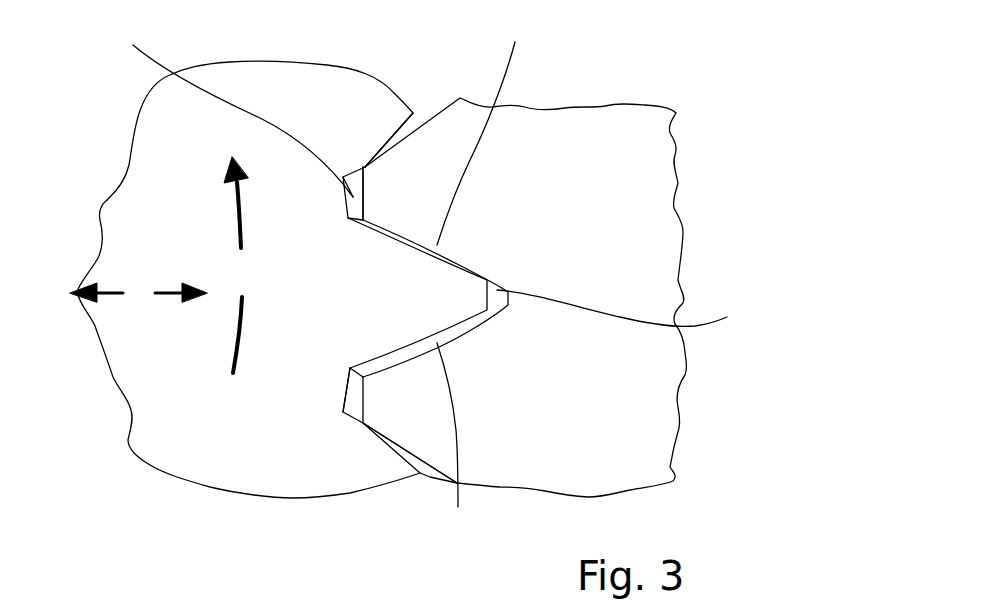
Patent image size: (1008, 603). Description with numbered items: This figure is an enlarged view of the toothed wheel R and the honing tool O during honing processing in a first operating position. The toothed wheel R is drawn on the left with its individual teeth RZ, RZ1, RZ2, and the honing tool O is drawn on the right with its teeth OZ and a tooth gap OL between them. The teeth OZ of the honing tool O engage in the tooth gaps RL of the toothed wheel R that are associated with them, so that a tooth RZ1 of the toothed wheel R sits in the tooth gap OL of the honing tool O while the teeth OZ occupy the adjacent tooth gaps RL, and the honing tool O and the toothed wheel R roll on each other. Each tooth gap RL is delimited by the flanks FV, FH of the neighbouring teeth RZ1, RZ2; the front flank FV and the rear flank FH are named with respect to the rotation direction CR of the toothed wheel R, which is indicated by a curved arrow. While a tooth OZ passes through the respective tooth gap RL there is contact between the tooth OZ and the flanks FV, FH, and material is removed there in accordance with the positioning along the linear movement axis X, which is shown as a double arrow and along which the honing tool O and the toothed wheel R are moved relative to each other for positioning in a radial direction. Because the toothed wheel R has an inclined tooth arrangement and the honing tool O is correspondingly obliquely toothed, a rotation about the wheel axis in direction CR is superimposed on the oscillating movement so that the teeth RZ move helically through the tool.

The toothed wheel R is at (185, 163).
The honing tool O is at (640, 173).
The tooth of the toothed wheel RZ1 is at (449, 308).
The tooth of the toothed wheel RZ is at (378, 116).
The tooth of the toothed wheel RZ2 is at (371, 476).
The teeth of the honing tool OZ is at (405, 183).
The front flank FV is at (482, 131).
The rear flank FH is at (457, 440).
The tooth gap of the toothed wheel RL is at (238, 106).
The tooth gap of the honing tool OL is at (626, 308).
The rotation direction of the toothed wheel CR is at (241, 265).
The linear movement axis X is at (138, 293).